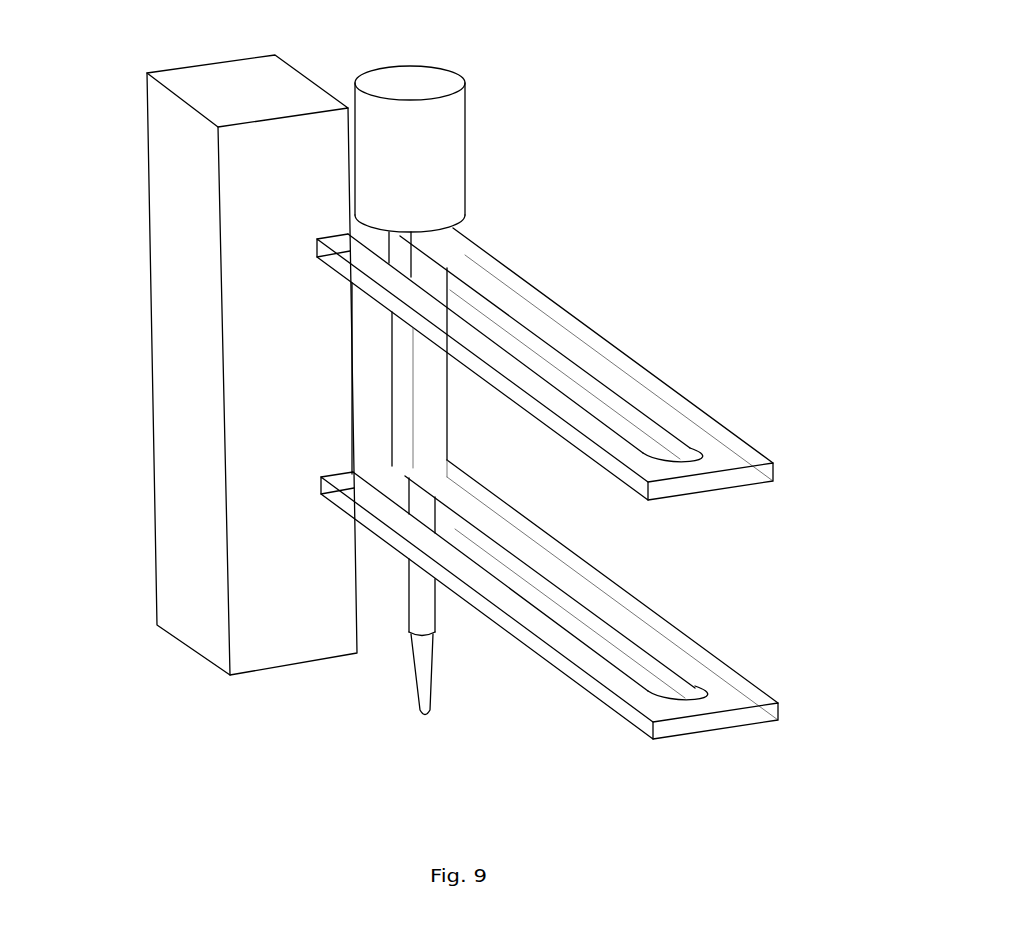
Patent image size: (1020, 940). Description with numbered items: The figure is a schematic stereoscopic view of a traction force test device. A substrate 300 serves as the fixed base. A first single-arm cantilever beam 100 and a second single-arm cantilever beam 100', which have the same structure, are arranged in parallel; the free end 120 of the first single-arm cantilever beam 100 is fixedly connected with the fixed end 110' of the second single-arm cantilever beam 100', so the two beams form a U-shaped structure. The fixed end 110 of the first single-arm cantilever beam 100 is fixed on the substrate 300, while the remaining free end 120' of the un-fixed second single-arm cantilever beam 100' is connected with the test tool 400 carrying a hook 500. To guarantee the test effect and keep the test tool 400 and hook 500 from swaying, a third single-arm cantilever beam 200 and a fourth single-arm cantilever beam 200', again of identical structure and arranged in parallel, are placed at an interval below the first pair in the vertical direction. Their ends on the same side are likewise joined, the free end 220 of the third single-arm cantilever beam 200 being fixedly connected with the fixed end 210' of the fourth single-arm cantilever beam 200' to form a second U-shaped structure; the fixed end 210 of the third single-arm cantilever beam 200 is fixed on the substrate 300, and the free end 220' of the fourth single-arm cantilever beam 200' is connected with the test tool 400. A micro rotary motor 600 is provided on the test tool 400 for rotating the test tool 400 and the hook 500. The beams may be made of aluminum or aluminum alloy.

The first single-arm cantilever beam 100 is at (482, 367).
The second single-arm cantilever beam 100' is at (613, 354).
The fixed end of the first single-arm cantilever beam 110 is at (211, 257).
The fixed end of the second single-arm cantilever beam 110' is at (759, 421).
The free end of the first single-arm cantilever beam 120 is at (660, 401).
The free end of the second single-arm cantilever beam 120' is at (545, 313).
The third single-arm cantilever beam 200 is at (487, 637).
The fourth single-arm cantilever beam 200' is at (619, 590).
The fixed end of the third single-arm cantilever beam 210 is at (288, 622).
The fixed end of the fourth single-arm cantilever beam 210' is at (766, 684).
The free end of the third single-arm cantilever beam 220 is at (581, 687).
The free end of the fourth single-arm cantilever beam 220' is at (550, 569).
The substrate 300 is at (197, 527).
The test tool 400 is at (437, 600).
The hook 500 is at (422, 719).
The micro rotary motor 600 is at (443, 122).